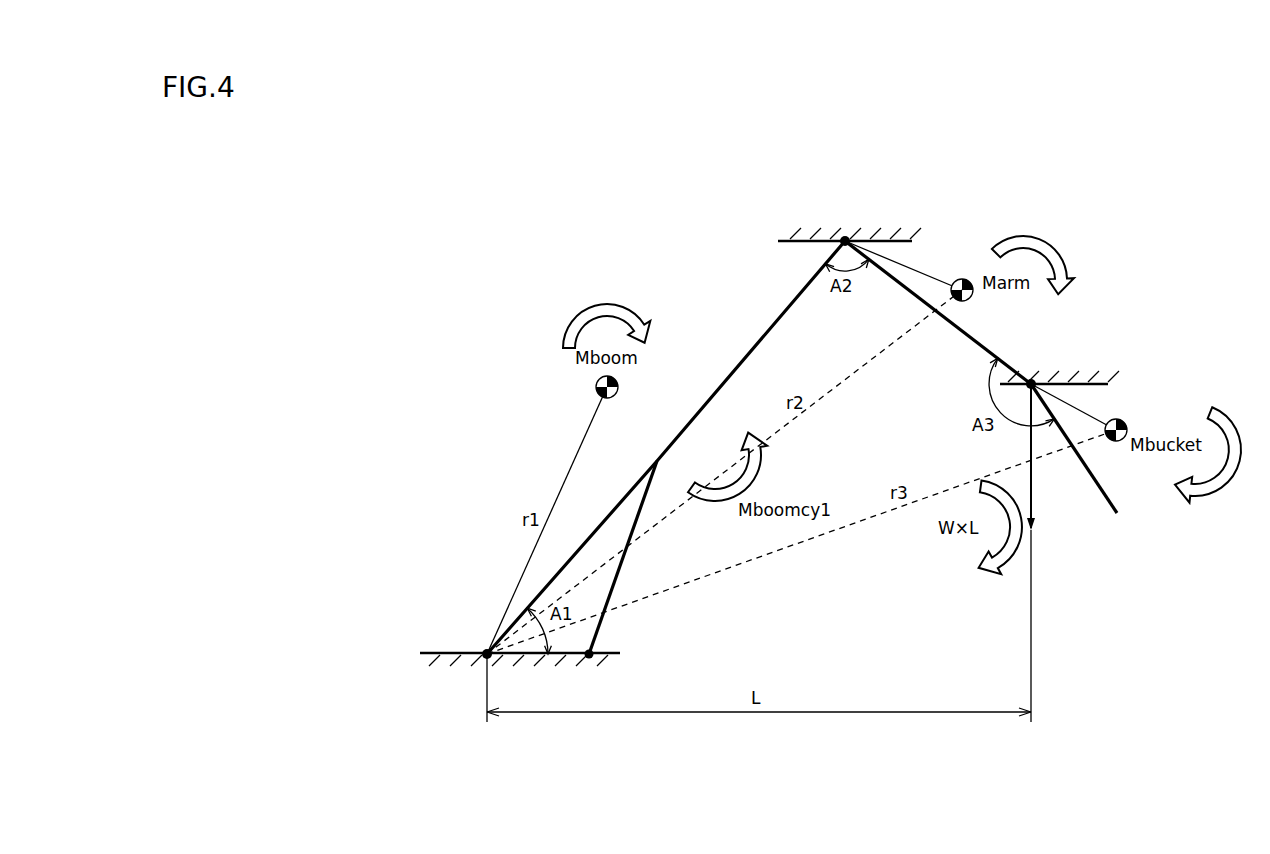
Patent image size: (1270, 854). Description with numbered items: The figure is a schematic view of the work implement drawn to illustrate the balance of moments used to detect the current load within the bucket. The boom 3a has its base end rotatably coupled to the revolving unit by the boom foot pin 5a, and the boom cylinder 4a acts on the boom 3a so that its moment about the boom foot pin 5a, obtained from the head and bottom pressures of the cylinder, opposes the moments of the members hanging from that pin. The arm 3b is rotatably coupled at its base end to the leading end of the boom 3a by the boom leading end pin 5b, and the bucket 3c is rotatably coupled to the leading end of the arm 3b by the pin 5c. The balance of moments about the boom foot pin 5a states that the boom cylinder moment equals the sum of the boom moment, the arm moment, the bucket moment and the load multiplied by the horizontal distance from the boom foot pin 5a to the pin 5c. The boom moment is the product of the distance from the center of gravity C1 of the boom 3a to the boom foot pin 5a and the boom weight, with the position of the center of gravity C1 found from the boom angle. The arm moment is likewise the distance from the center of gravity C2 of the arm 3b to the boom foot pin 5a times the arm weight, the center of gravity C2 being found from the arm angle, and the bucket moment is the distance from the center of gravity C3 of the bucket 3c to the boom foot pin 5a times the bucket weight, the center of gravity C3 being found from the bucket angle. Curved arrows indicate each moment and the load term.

The boom 3a is at (693, 417).
The arm 3b is at (976, 340).
The bucket 3c is at (1103, 492).
The boom cylinder 4a is at (598, 640).
The boom foot pin 5a is at (487, 650).
The boom leading end pin 5b is at (845, 239).
The pin 5c is at (1033, 382).
The center of gravity of boom C1 is at (552, 515).
The center of gravity of arm C2 is at (909, 271).
The center of gravity of bucket C3 is at (1088, 412).